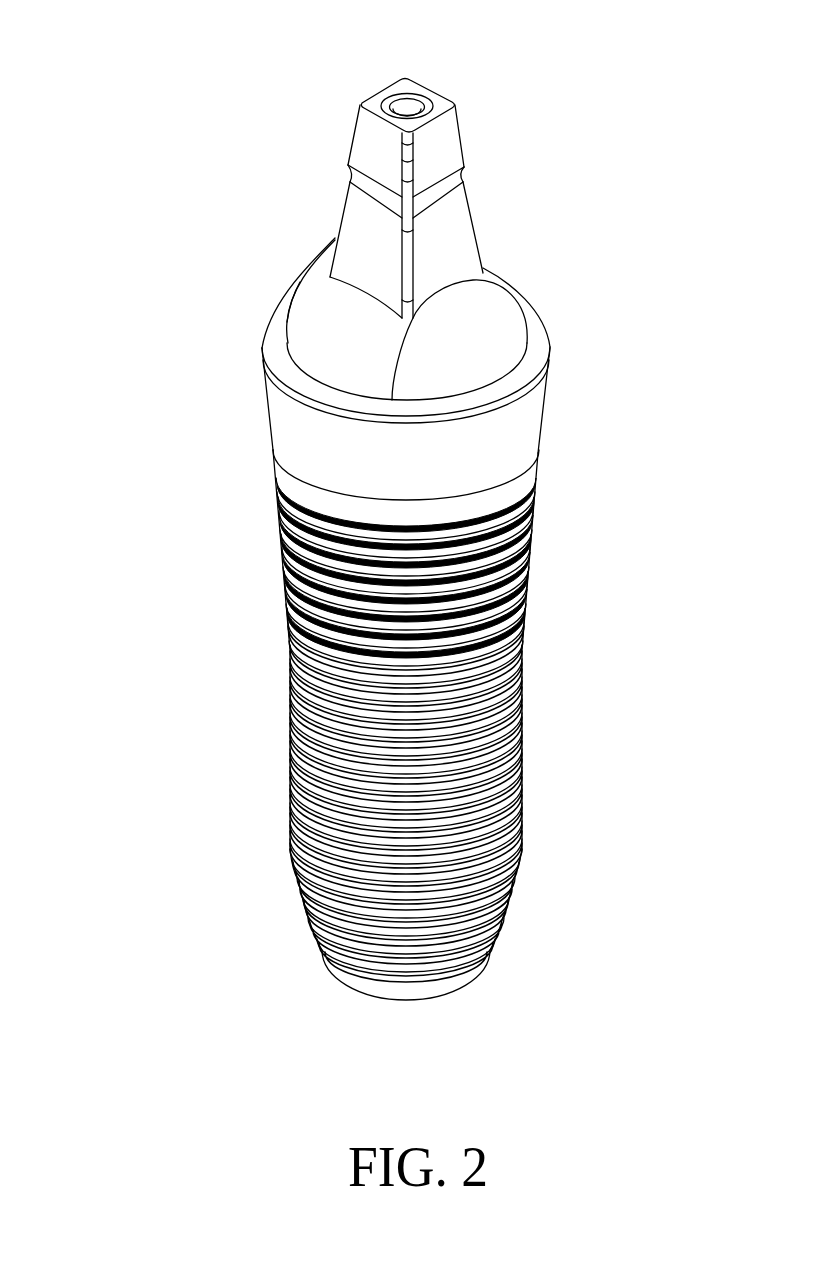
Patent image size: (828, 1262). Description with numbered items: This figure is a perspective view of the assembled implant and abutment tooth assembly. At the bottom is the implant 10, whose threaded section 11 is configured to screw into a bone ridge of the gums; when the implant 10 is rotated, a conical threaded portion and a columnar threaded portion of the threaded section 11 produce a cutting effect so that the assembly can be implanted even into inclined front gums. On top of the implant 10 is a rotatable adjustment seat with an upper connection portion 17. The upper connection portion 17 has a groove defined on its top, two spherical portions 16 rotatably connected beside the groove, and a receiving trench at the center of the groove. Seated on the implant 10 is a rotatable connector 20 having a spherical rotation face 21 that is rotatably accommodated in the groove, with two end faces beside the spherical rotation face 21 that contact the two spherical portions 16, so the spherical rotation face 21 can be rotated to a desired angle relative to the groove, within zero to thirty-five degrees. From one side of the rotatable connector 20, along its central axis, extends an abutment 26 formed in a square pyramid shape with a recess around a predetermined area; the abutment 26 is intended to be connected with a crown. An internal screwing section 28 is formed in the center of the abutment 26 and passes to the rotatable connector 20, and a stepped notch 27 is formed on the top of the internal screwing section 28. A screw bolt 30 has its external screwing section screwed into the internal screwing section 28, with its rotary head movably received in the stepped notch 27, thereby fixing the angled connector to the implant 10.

The implant 10 is at (373, 673).
The threaded section 11 is at (493, 690).
The upper connection portion 17 is at (527, 418).
The rotatable connector 20 is at (390, 200).
The spherical rotation face 21 is at (322, 328).
The spherical portions 16 is at (485, 322).
The abutment 26 is at (453, 137).
The stepped notch 27 is at (413, 100).
The internal screwing section 28 is at (407, 107).
The screw bolt 30 is at (422, 115).